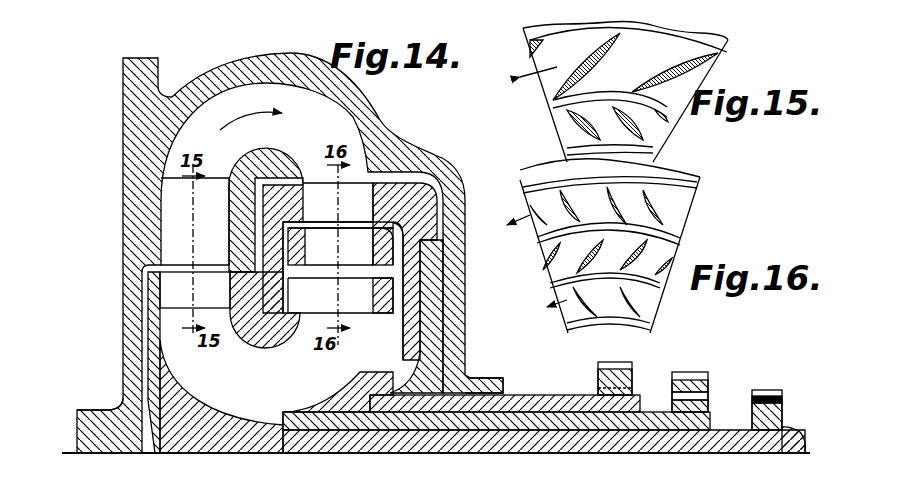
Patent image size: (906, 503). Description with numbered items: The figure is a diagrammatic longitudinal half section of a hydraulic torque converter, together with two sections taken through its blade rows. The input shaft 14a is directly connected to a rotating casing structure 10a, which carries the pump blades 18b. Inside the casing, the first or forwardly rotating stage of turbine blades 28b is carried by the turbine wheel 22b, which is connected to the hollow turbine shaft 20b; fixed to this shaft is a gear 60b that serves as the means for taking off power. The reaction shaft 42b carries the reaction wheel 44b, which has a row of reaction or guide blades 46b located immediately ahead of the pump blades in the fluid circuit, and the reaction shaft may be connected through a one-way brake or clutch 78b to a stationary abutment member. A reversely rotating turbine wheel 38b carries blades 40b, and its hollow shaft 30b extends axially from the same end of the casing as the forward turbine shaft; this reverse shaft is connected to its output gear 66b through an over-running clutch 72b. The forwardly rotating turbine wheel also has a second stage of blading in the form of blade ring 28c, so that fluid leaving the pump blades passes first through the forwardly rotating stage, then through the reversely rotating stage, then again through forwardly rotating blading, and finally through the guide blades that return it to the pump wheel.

In FIG. 14, the rotating casing structure 10a is at (195, 88).
In FIG. 14, the input shaft 14a is at (92, 409).
In FIG. 14, the pump blades 18b is at (204, 212).
In FIG. 15, the pump blades 18b is at (654, 84).
In FIG. 14, the hollow turbine shaft 20b is at (522, 400).
In FIG. 14, the turbine wheel 22b is at (540, 263).
In FIG. 14, the turbine blades 28b is at (310, 196).
In FIG. 16, the turbine blades 28b is at (663, 215).
In FIG. 14, the blade ring 28c is at (320, 307).
In FIG. 16, the blade ring 28c is at (640, 307).
In FIG. 14, the hollow shaft 30b is at (478, 410).
In FIG. 14, the reversely rotating turbine wheel 38b is at (345, 400).
In FIG. 14, the blades 40b is at (345, 240).
In FIG. 16, the blades 40b is at (650, 248).
In FIG. 14, the reaction shaft 42b is at (462, 455).
In FIG. 14, the reaction wheel 44b is at (193, 403).
In FIG. 14, the reaction or guide blades 46b is at (204, 300).
In FIG. 15, the reaction or guide blades 46b is at (647, 137).
In FIG. 14, the gear 60b is at (598, 381).
In FIG. 14, the gear 66b is at (707, 380).
In FIG. 14, the over-running clutch 72b is at (702, 396).
In FIG. 14, the one-way brake or clutch 78b is at (780, 401).